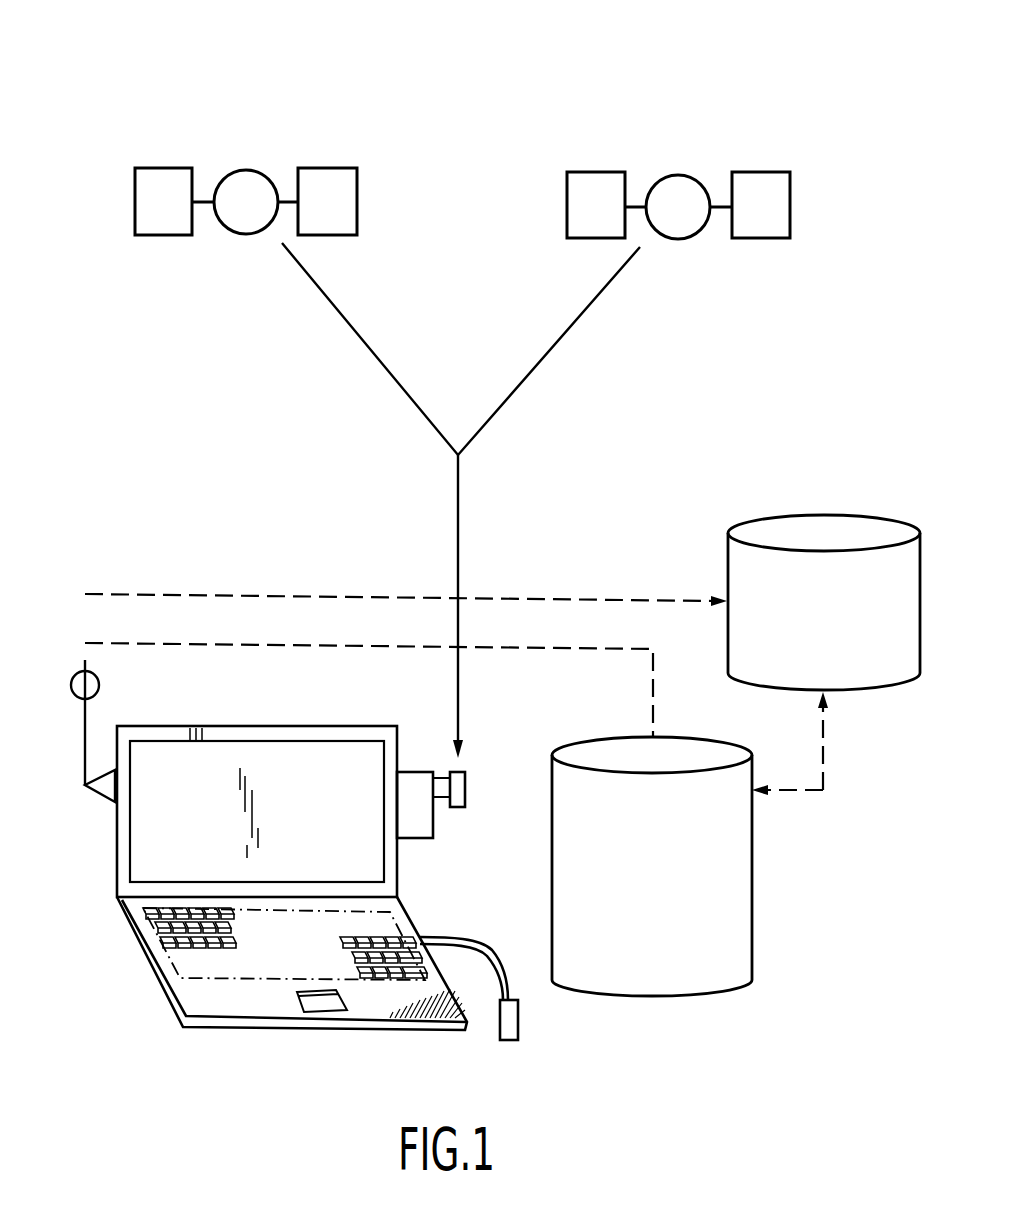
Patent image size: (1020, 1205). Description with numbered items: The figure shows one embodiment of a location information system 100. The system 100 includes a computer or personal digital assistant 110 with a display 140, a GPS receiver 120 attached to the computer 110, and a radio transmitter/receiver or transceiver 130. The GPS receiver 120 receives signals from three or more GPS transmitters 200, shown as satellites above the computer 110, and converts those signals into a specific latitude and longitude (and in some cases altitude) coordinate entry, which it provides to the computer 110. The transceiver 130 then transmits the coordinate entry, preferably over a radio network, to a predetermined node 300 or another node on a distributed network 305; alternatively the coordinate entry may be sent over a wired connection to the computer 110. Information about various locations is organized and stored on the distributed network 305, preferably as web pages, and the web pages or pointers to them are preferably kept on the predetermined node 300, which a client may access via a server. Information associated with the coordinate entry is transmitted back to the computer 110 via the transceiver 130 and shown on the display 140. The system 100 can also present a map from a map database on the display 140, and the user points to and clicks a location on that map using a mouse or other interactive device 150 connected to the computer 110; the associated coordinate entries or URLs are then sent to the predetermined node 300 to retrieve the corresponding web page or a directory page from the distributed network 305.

The location information system 100 is at (521, 92).
The computer or personal digital assistant 110 is at (133, 940).
The GPS receiver 120 is at (465, 790).
The transceiver 130 is at (102, 796).
The display 140 is at (365, 856).
The mouse or other interactive device 150 is at (518, 1030).
The GPS transmitters 200 is at (247, 170).
The predetermined node 300 is at (652, 996).
The distributed network 305 is at (826, 515).